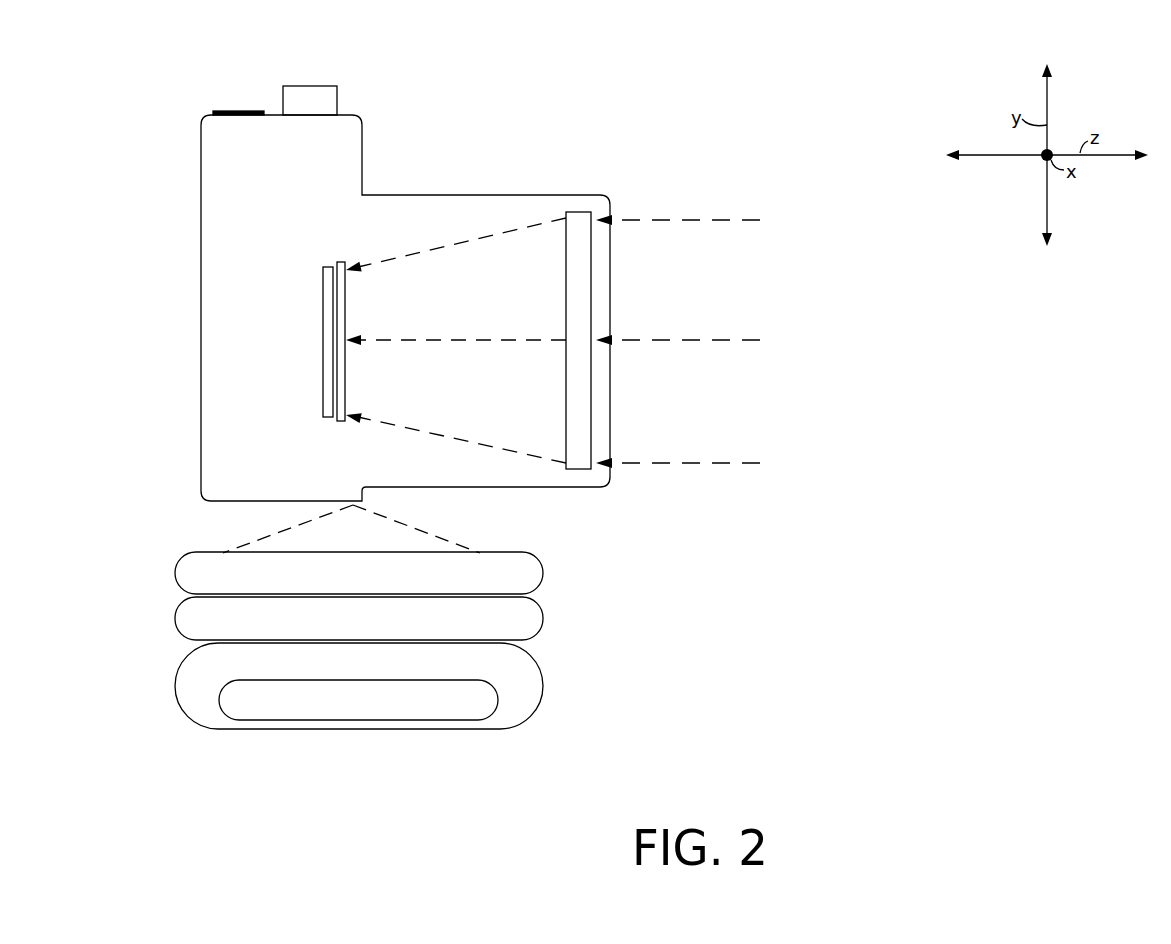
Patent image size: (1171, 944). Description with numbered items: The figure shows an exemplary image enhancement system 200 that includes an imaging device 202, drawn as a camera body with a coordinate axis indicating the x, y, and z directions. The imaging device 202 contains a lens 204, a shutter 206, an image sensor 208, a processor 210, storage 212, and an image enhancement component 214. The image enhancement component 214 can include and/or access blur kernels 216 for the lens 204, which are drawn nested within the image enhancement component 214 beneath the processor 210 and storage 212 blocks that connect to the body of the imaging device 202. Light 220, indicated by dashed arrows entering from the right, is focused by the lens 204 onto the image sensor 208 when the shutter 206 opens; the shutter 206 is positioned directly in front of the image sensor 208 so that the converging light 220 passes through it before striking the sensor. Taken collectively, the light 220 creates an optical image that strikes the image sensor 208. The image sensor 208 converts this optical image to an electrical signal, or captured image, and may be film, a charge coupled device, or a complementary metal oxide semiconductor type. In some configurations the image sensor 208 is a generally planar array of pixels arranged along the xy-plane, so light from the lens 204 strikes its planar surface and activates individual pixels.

The system 200 is at (728, 44).
The imaging device 202 is at (636, 165).
The lens 204 is at (566, 276).
The shutter 206 is at (345, 316).
The image sensor 208 is at (328, 418).
The processor 210 is at (432, 584).
The storage 212 is at (420, 629).
The image enhancement component 214 is at (478, 674).
The blur kernels 216 is at (442, 711).
The light 220 is at (858, 231).